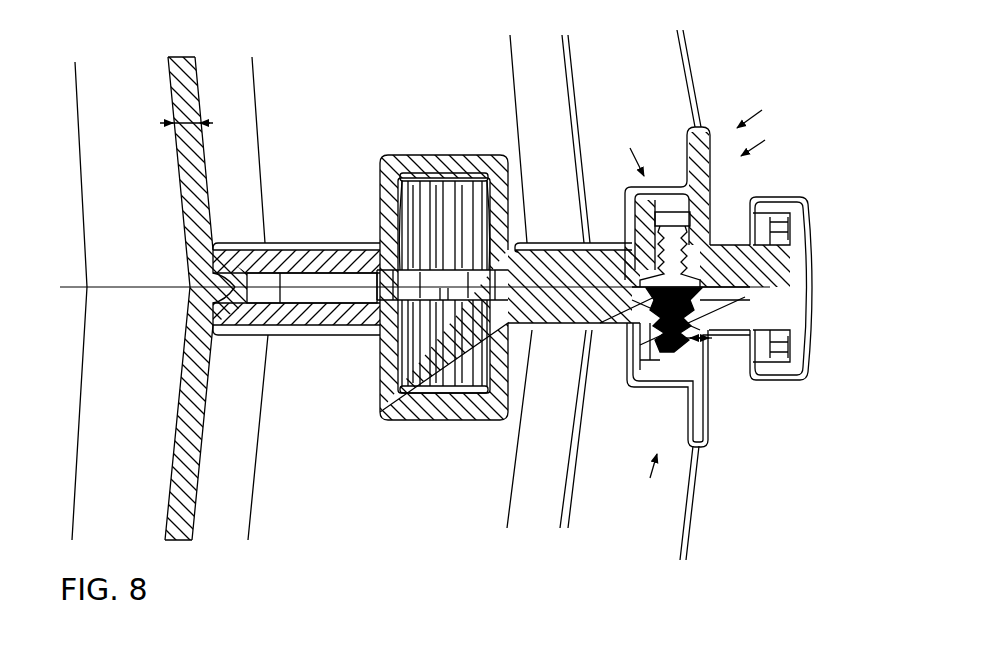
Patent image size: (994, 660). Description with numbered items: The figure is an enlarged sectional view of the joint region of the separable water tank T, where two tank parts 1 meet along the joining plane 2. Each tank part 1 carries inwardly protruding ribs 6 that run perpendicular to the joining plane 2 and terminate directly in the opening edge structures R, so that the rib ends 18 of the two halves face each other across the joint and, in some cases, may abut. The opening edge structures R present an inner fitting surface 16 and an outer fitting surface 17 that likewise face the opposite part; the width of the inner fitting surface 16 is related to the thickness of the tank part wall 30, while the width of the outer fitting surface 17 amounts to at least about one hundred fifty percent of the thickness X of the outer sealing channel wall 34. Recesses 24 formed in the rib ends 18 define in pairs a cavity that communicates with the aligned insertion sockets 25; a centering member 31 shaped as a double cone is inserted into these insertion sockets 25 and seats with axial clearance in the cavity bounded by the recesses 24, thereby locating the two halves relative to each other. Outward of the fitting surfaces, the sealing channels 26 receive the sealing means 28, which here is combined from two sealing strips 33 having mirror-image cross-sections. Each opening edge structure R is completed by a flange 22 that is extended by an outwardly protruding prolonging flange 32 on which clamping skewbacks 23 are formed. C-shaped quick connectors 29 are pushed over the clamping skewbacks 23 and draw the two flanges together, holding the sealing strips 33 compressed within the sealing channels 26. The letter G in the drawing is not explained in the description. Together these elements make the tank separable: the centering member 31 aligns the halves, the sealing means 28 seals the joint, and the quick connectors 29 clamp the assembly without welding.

The tank part 1 is at (461, 62).
The joining plane 2 is at (115, 288).
The ribs 6 is at (290, 90).
The inner fitting surface 16 is at (588, 287).
The outer fitting surface 17 is at (722, 268).
The rib ends 18 is at (212, 287).
The flange 22 is at (760, 312).
The clamping skewbacks 23 is at (768, 228).
The recesses 24 is at (333, 270).
The insertion socket 25 is at (405, 178).
The sealing channels 26 is at (682, 215).
The sealing means 28 is at (686, 362).
The quick connectors 29 is at (806, 312).
The tank part wall 30 is at (188, 178).
The centering member 31 is at (470, 228).
The prolonging flange 32 is at (803, 288).
The sealing strips 33 is at (637, 294).
The outer sealing channel wall 34 is at (690, 343).
The thickness of the outer sealing channel wall X is at (182, 125).
The opening edge structures R is at (635, 310).
The water tank T is at (758, 105).
The direction G is at (763, 134).